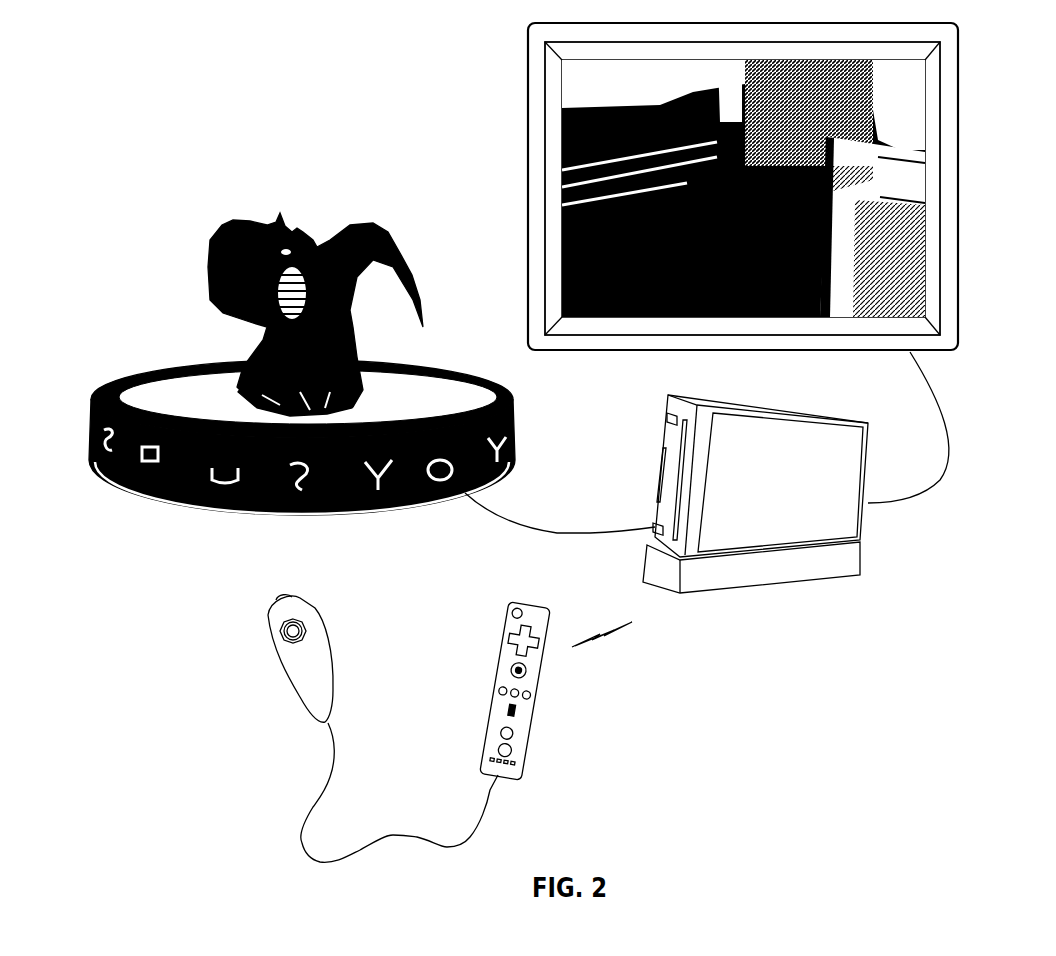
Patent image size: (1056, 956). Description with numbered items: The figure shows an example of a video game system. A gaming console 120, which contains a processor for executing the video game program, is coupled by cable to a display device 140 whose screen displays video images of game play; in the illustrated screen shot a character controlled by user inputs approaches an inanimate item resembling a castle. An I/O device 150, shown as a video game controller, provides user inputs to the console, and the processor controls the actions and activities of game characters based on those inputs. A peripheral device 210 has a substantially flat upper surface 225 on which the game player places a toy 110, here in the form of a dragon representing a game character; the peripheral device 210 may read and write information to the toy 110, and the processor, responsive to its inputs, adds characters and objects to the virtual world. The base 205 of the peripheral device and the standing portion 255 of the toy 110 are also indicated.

The toy 110 is at (226, 212).
The gaming platform 120 is at (852, 577).
The display device 140 is at (923, 160).
The I/O device 150 is at (533, 679).
The portal base 205 is at (213, 502).
The peripheral device 210 is at (305, 497).
The upper surface 225 is at (178, 402).
The figure base 255 is at (352, 402).